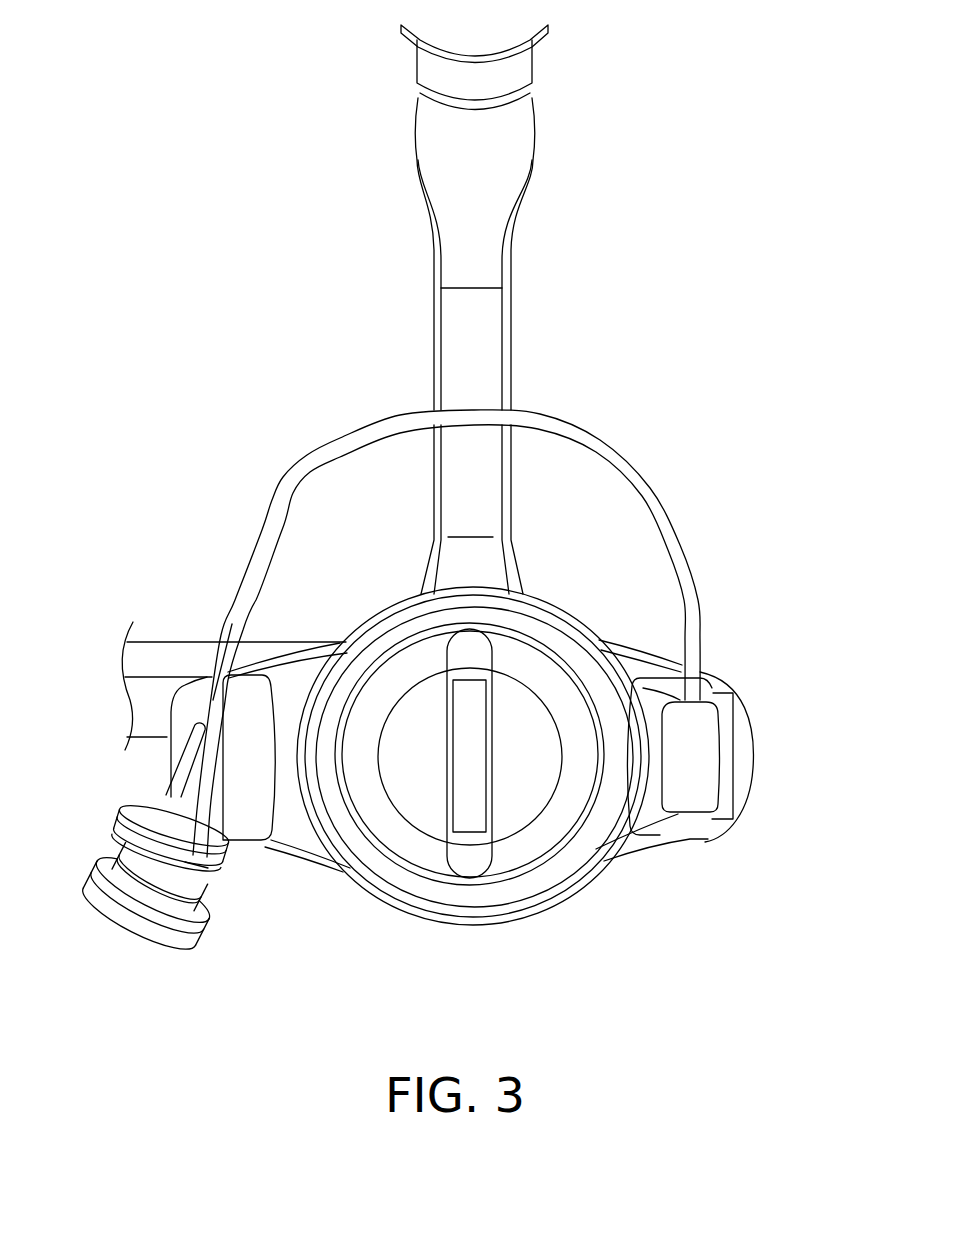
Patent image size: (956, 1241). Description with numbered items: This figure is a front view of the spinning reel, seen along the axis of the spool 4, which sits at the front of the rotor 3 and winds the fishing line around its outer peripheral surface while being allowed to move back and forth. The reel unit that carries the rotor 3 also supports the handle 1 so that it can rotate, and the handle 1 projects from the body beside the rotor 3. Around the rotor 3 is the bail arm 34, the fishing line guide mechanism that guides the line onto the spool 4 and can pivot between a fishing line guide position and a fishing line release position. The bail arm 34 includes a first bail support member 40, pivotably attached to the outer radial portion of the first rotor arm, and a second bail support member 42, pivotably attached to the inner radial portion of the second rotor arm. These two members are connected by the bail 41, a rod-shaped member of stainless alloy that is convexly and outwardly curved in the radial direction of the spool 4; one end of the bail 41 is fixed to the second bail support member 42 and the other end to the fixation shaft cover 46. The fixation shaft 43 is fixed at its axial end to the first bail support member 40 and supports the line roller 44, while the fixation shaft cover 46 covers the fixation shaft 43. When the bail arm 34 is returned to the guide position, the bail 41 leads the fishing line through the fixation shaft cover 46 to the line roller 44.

The handle 1 is at (141, 648).
The rotor 3 is at (707, 838).
The spool 4 is at (410, 885).
The bail arm 34 is at (158, 945).
The first bail support member 40 is at (200, 725).
The bail 41 is at (650, 488).
The second bail support member 42 is at (697, 740).
The fixation shaft 43 is at (190, 810).
The line roller 44 is at (115, 852).
The fixation shaft cover 46 is at (150, 838).